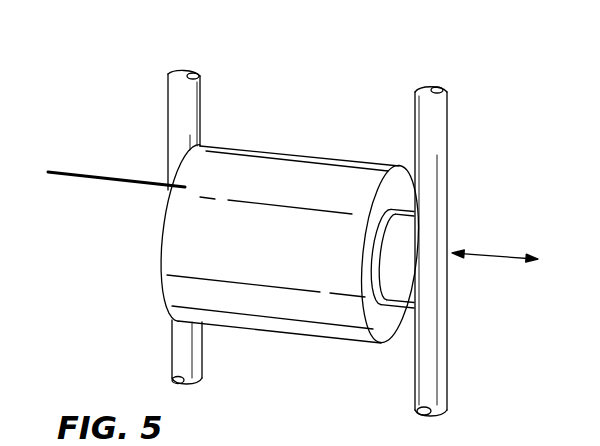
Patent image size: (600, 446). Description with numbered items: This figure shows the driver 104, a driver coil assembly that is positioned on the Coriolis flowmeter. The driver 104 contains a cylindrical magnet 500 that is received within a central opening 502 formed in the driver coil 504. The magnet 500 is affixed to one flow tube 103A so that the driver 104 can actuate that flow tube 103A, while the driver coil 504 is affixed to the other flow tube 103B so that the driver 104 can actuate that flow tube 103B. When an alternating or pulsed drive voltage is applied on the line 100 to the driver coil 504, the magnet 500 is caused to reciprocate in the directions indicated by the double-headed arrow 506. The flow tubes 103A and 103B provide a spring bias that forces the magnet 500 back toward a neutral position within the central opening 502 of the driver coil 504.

The line 100 is at (88, 172).
The flow tube 103A is at (437, 118).
The flow tube 103B is at (175, 91).
The driver 104 is at (412, 54).
The cylindrical magnet 500 is at (412, 208).
The central opening 502 is at (388, 287).
The driver coil 504 is at (187, 252).
The double-headed arrow 506 is at (492, 258).